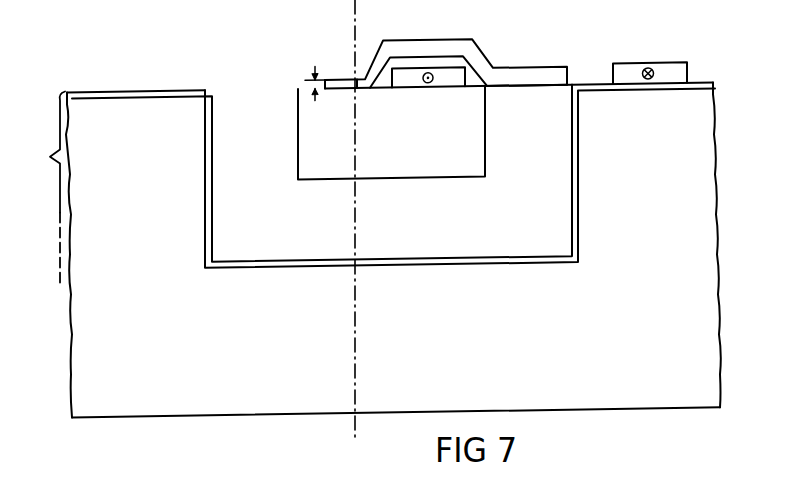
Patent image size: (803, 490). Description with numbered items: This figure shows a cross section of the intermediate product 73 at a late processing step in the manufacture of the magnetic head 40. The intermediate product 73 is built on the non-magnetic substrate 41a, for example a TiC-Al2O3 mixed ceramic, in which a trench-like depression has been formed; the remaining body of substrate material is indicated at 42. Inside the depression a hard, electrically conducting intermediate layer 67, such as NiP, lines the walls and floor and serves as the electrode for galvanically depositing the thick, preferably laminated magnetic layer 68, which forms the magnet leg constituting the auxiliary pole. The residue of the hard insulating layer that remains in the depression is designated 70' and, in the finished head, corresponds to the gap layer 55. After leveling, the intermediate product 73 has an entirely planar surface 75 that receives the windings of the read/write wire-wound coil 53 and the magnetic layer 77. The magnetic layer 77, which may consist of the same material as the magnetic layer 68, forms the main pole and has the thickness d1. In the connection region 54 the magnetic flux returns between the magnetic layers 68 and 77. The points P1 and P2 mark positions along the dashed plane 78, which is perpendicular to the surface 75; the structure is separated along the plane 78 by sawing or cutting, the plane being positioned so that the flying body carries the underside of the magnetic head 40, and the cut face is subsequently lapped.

The magnetic head 40 is at (393, 249).
The non-magnetic substrate 41a is at (393, 249).
The substrate lower region 42 is at (357, 387).
The plane 78 is at (357, 12).
The intermediate product 73 is at (50, 171).
The planar surface 75 is at (105, 88).
The magnetic layer 68 is at (460, 174).
The intermediate layer 67 is at (578, 171).
The residual insulating layer 70' is at (391, 132).
The gap layer 55 is at (391, 132).
The thickness of the main pole d1 is at (323, 80).
The point P1 is at (353, 86).
The point P2 is at (354, 236).
The magnetic layer 77 is at (418, 41).
The connection region 54 is at (527, 88).
The read/write wire-wound coil 53 is at (625, 76).